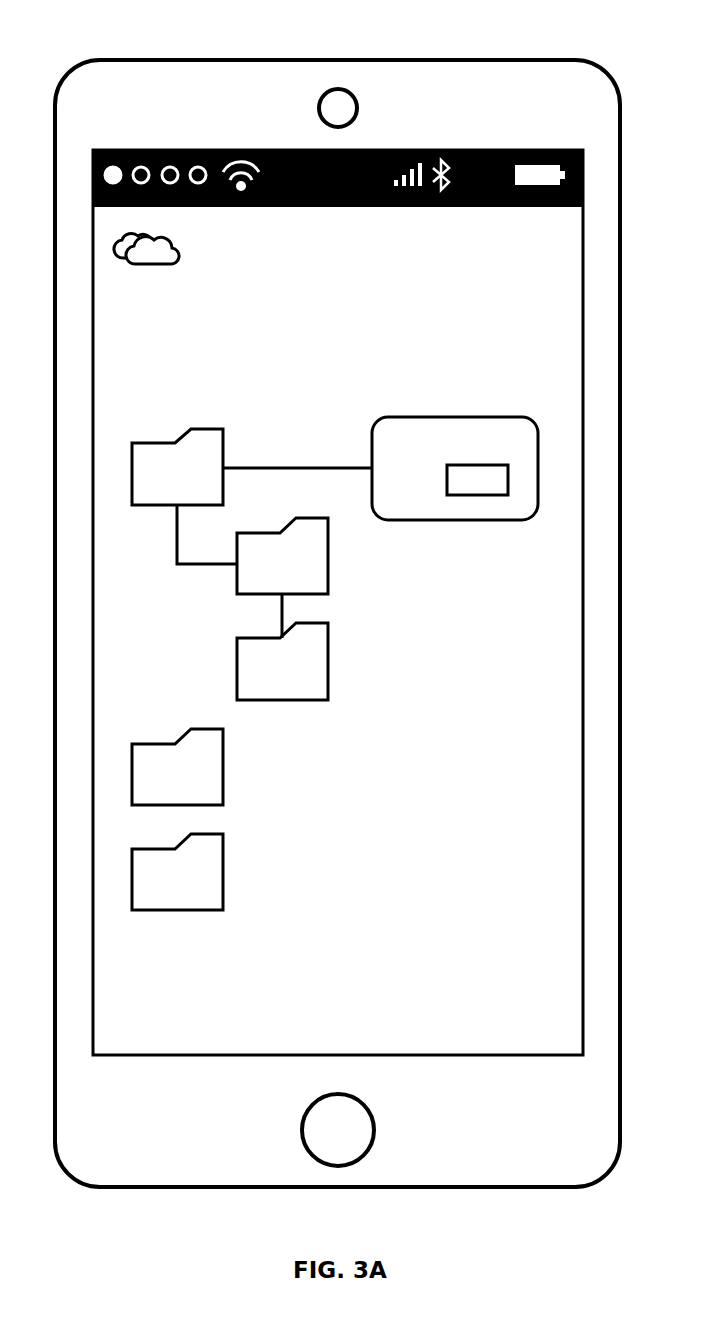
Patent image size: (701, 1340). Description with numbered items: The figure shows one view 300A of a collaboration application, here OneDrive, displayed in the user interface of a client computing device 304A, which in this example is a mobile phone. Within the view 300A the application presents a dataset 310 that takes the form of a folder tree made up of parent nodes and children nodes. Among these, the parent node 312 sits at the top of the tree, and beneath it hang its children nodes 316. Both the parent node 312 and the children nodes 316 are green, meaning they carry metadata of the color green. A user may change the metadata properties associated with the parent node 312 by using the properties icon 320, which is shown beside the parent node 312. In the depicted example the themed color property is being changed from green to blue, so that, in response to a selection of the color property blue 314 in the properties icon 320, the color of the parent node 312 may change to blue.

The view 300A is at (138, 28).
The client computing device 304A is at (338, 602).
The dataset 310 is at (172, 345).
The parent node 312 is at (223, 443).
The color property blue 314 is at (476, 495).
The children nodes 316 is at (205, 614).
The properties icon 320 is at (455, 417).